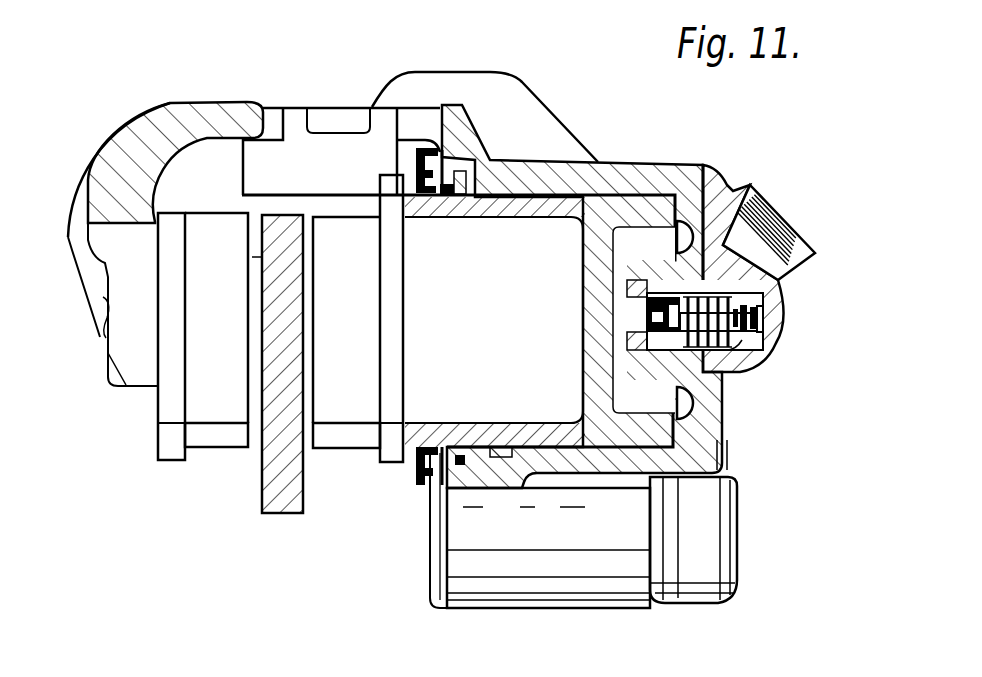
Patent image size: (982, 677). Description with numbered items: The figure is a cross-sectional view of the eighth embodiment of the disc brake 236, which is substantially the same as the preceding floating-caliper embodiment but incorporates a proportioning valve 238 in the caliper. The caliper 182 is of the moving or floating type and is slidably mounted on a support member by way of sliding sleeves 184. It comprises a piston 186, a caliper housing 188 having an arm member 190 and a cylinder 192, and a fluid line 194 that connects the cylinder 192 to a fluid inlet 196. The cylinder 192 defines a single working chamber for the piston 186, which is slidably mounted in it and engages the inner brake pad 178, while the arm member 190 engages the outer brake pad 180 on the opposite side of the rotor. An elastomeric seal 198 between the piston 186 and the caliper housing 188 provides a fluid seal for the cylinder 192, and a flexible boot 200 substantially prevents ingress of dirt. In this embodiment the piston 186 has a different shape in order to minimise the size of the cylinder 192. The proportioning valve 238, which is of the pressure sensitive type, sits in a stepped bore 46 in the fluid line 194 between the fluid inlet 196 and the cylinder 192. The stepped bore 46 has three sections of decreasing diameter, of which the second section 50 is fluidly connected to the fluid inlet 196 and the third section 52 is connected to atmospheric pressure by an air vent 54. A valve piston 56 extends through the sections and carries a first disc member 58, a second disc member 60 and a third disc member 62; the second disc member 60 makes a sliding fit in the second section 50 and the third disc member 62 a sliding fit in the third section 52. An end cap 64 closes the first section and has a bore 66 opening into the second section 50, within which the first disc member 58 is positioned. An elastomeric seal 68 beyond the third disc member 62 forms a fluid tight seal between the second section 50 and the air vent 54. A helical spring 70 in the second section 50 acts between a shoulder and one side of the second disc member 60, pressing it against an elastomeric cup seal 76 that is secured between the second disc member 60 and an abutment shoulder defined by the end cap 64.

The arm member 190 is at (156, 132).
The disc brake 236 is at (560, 100).
The caliper 182 is at (628, 172).
The valve piston 56 is at (705, 192).
The caliper housing 188 is at (713, 193).
The fluid inlet 196 is at (783, 217).
The helical spring 70 is at (762, 300).
The stepped bore 46 is at (770, 310).
The elastomeric seal 68 is at (770, 318).
The air vent 54 is at (762, 326).
The third section 52 is at (760, 332).
The third disc member 62 is at (765, 335).
The proportioning valve 238 is at (737, 372).
The second section 50 is at (727, 418).
The elastomeric cup seal 76 is at (656, 296).
The fluid line 194 is at (627, 305).
The bore 66 is at (627, 320).
The first disc member 58 is at (627, 327).
The end cap 64 is at (627, 343).
The cylinder 192 is at (620, 392).
The second disc member 60 is at (603, 406).
The outer brake pad 180 is at (226, 435).
The inner brake pad 178 is at (340, 438).
The flexible boot 200 is at (417, 487).
The elastomeric seal 198 is at (511, 455).
The piston 186 is at (573, 432).
The sliding sleeves 184 is at (703, 538).